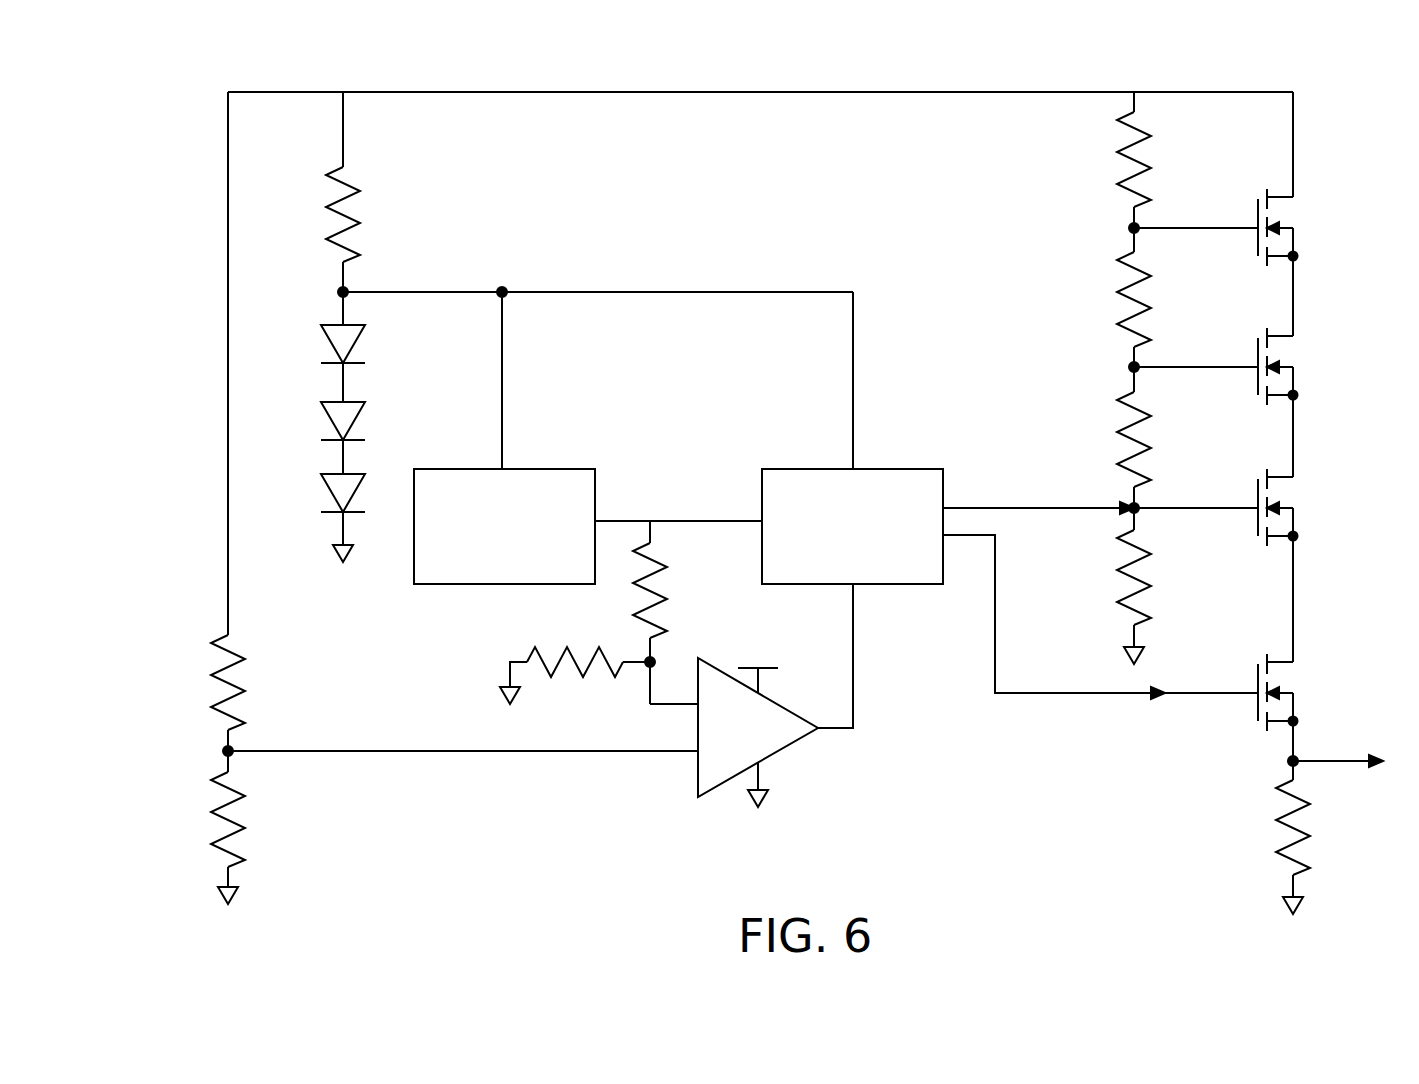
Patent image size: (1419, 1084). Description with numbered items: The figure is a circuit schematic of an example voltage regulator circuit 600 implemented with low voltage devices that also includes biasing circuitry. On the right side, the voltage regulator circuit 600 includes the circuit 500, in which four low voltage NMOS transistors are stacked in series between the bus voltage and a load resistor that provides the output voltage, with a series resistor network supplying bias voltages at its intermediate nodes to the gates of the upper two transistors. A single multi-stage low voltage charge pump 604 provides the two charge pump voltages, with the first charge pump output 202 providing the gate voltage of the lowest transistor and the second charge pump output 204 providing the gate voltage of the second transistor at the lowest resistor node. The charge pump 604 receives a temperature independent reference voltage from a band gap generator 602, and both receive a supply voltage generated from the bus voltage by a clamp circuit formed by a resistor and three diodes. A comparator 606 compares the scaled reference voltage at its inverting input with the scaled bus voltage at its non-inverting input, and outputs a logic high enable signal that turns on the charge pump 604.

The voltage regulator circuit 600 is at (203, 72).
The band gap generator 602 is at (504, 526).
The charge pump 604 is at (852, 526).
The comparator 606 is at (734, 733).
The voltage regulator circuit 500 is at (1180, 789).
The first charge pump output 202 is at (1100, 629).
The second charge pump output 204 is at (1038, 495).